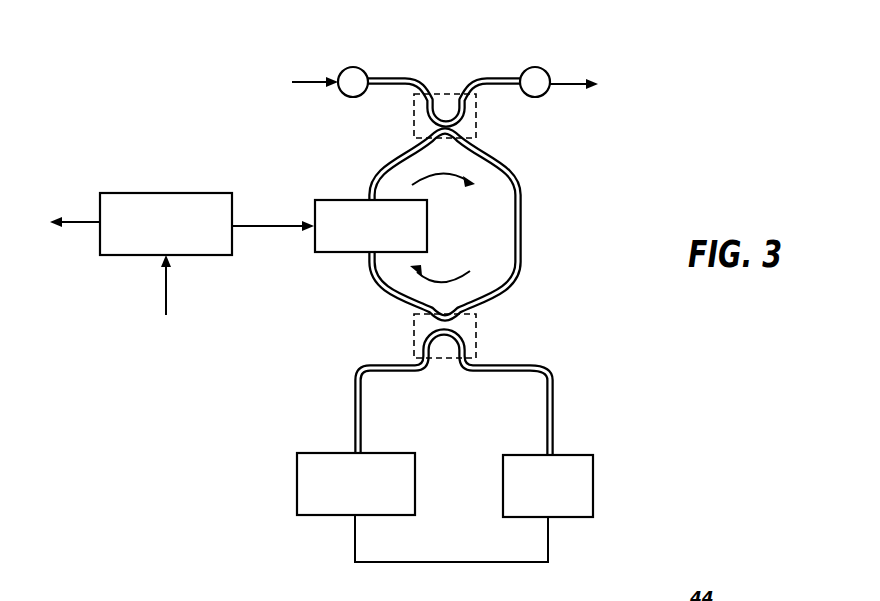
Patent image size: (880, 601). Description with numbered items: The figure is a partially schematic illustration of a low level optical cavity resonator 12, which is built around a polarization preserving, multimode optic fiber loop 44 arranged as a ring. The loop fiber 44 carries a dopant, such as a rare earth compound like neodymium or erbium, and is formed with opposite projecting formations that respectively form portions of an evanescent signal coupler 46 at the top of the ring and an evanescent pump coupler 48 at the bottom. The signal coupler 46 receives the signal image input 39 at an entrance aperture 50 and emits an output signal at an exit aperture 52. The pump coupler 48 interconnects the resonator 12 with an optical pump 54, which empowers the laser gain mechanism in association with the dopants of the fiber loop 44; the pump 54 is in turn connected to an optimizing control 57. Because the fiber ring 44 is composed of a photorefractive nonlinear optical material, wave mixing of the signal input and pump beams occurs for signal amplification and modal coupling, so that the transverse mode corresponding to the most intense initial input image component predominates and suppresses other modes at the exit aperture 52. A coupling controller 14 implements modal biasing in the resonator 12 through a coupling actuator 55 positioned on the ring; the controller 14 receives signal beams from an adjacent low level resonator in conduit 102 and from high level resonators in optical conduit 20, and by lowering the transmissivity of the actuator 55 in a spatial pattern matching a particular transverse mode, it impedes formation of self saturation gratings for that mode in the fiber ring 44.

The low level optical cavity resonator 12 is at (609, 132).
The coupling controller 14 is at (165, 193).
The optical conduit 20 is at (166, 301).
The signal image input 39 is at (310, 80).
The optic fiber loop 44 is at (519, 224).
The signal coupler 46 is at (414, 117).
The pump coupler 48 is at (413, 334).
The entrance aperture 50 is at (352, 66).
The exit aperture 52 is at (537, 66).
The optical pump 54 is at (585, 455).
The coupling actuator 55 is at (344, 253).
The optimizing control 57 is at (297, 483).
The conduit 102 is at (82, 222).